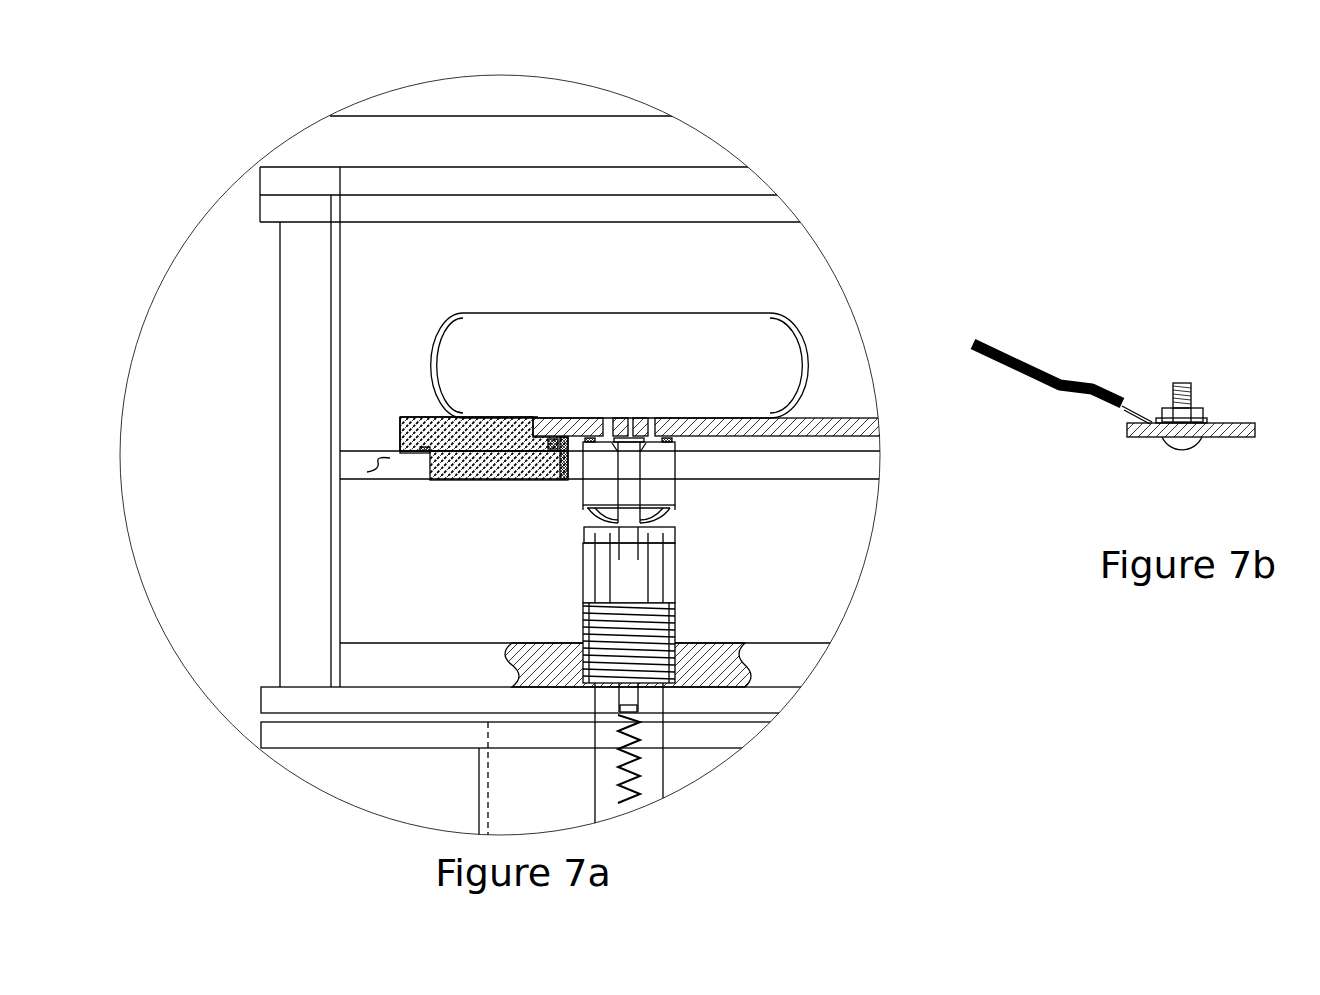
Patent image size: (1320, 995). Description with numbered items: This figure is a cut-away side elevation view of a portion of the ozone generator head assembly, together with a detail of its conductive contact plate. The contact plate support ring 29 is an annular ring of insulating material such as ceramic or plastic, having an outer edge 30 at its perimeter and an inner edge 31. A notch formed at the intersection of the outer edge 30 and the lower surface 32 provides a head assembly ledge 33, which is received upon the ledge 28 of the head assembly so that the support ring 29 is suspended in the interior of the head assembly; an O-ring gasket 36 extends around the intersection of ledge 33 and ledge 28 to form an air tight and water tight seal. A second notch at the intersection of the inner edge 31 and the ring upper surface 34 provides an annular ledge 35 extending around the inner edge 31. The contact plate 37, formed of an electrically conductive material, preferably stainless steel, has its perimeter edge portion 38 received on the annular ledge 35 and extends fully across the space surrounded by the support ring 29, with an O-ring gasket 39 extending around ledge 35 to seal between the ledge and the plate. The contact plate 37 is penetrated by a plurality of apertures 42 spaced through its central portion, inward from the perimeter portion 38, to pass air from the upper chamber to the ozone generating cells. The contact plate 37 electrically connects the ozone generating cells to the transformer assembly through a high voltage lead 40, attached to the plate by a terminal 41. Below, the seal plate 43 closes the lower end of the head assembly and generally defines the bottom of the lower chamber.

In FIG. 7A, the ledge 28 is at (229, 365).
In FIG. 7A, the contact plate support ring 29 is at (393, 265).
In FIG. 7A, the outer edge 30 is at (236, 331).
In FIG. 7A, the inner edge 31 is at (770, 522).
In FIG. 7A, the lower surface 32 is at (376, 638).
In FIG. 7A, the head assembly ledge 33 is at (283, 599).
In FIG. 7A, the ring upper surface 34 is at (359, 267).
In FIG. 7A, the annular ledge 35 is at (388, 231).
In FIG. 7A, the O-ring gasket 36 is at (271, 623).
In FIG. 7A, the contact plate 37 is at (749, 469).
In FIG. 7B, the contact plate 37 is at (1112, 480).
In FIG. 7A, the perimeter edge portion 38 is at (670, 314).
In FIG. 7A, the O-ring gasket 39 is at (423, 648).
In FIG. 7B, the high voltage lead 40 is at (1077, 325).
In FIG. 7B, the terminal 41 is at (1237, 351).
In FIG. 7A, the apertures 42 is at (819, 317).
In FIG. 7A, the seal plate 43 is at (728, 718).